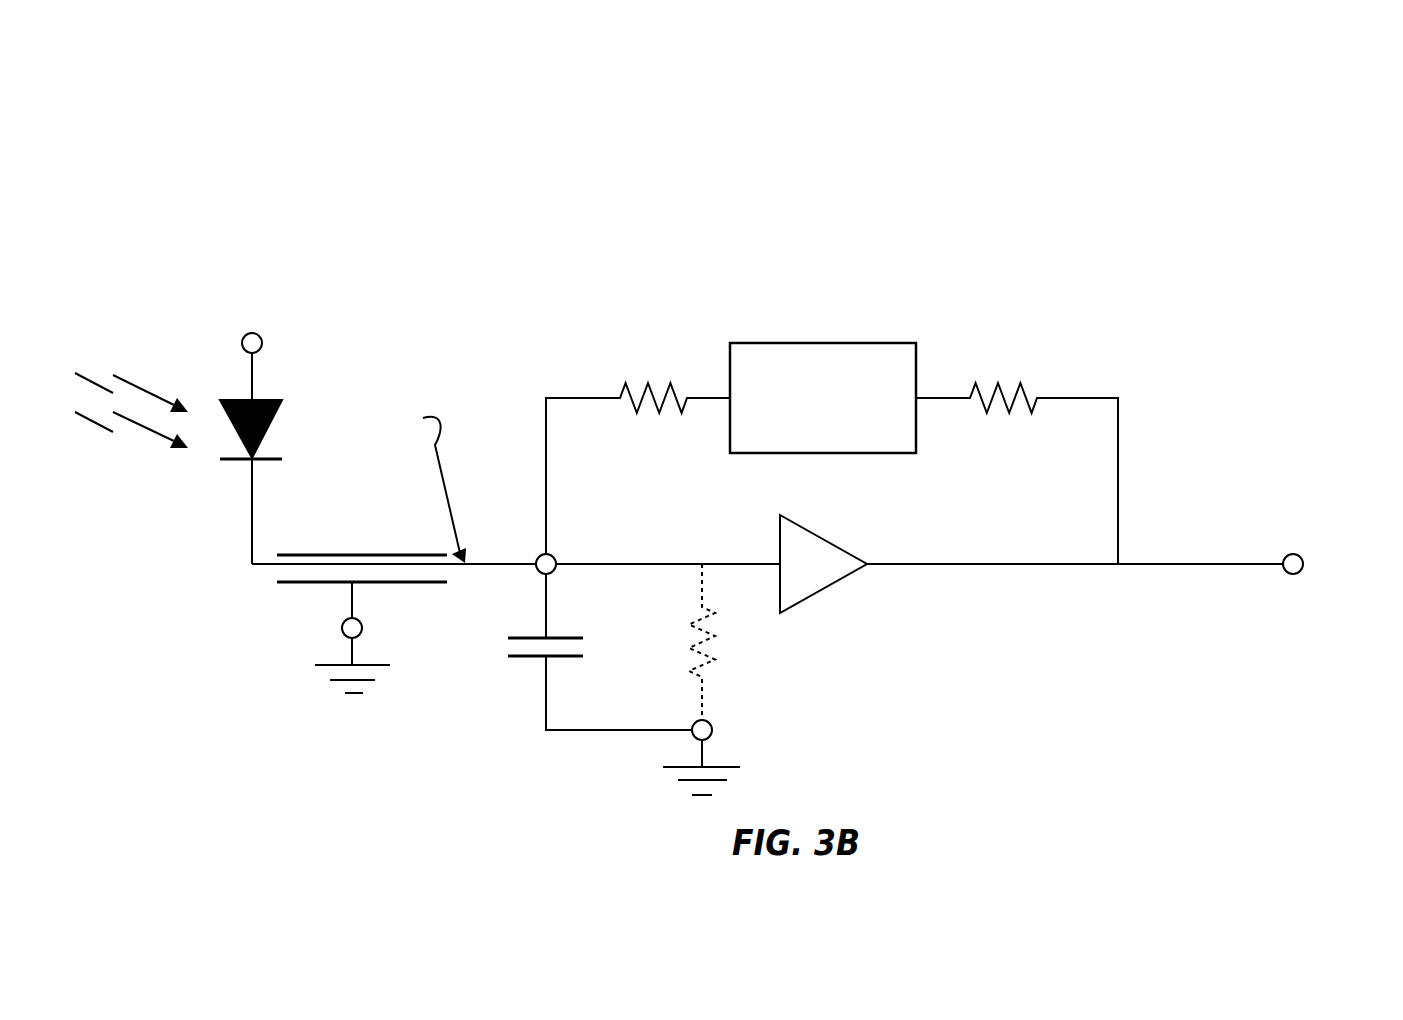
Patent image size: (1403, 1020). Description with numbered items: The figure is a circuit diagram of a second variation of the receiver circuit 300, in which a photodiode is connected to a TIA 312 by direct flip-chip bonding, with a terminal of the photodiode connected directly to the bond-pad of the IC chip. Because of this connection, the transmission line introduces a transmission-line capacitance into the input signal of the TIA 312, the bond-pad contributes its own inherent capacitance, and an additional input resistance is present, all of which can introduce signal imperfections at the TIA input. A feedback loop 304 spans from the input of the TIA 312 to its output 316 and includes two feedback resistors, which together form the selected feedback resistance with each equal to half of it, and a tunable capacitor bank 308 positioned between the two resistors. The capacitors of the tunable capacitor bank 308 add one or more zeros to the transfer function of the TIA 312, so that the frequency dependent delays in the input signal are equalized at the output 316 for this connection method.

The receiver circuit 300 is at (510, 147).
The feedback loop 304 is at (1116, 366).
The tunable capacitor bank 308 is at (830, 343).
The TIA 312 is at (827, 588).
The output 316 is at (1300, 554).